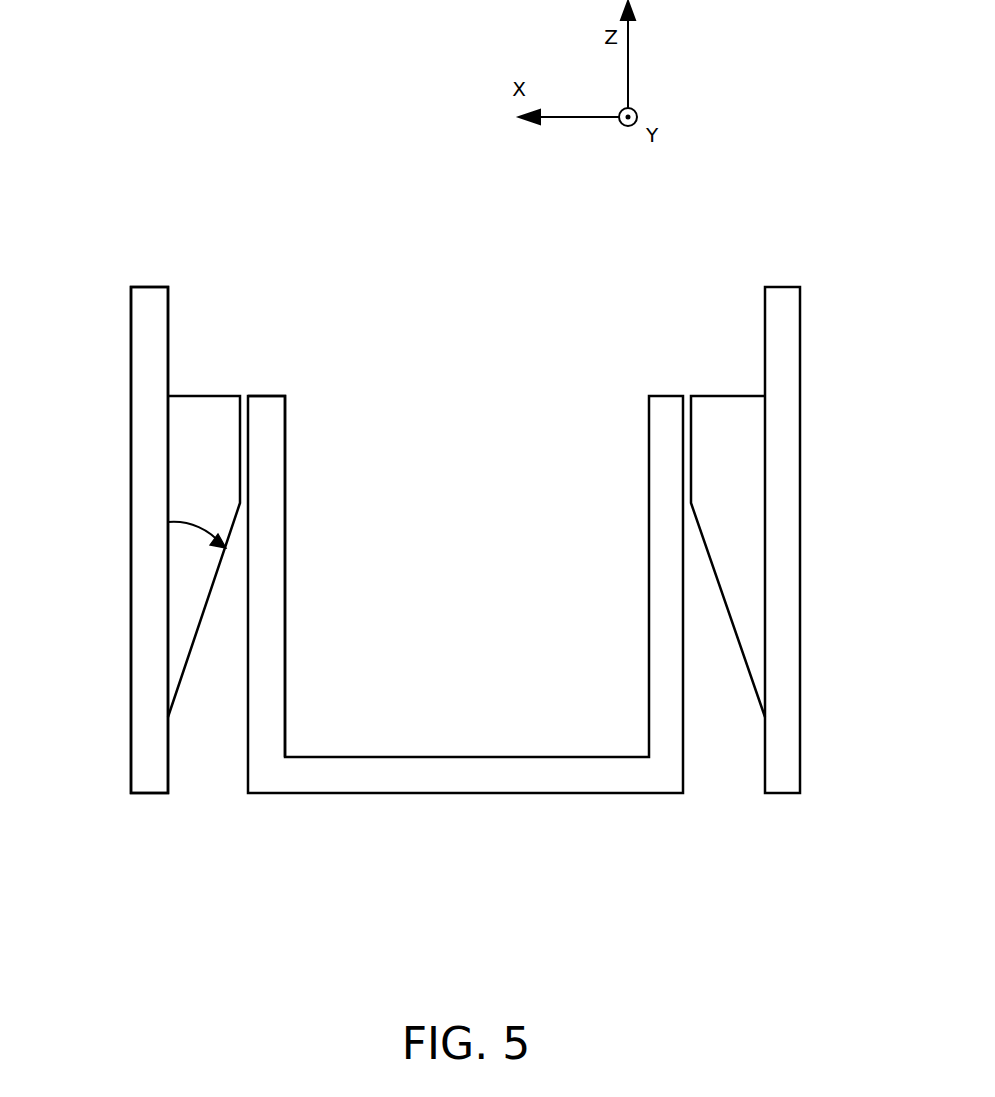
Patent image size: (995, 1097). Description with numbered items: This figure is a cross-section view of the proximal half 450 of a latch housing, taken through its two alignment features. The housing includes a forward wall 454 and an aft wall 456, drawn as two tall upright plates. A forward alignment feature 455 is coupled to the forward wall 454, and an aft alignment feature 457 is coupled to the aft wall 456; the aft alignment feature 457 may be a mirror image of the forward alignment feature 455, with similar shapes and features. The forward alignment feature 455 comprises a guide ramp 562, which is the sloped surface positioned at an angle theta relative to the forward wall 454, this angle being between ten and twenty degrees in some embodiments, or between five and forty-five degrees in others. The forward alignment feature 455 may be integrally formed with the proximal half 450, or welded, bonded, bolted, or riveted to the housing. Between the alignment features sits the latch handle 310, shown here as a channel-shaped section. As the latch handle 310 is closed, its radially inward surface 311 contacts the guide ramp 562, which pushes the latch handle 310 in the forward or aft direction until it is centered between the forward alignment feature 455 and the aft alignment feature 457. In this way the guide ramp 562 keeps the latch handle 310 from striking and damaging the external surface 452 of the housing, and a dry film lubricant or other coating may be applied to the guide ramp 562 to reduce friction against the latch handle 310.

The proximal half of the latch housing 450 is at (305, 178).
The external surface 452 is at (156, 793).
The forward wall 454 is at (131, 557).
The forward alignment feature 455 is at (195, 396).
The aft wall 456 is at (800, 458).
The aft alignment feature 457 is at (737, 396).
The latch handle 310 is at (467, 793).
The radially inward surface 311 is at (266, 396).
The guide ramp 562 is at (212, 605).